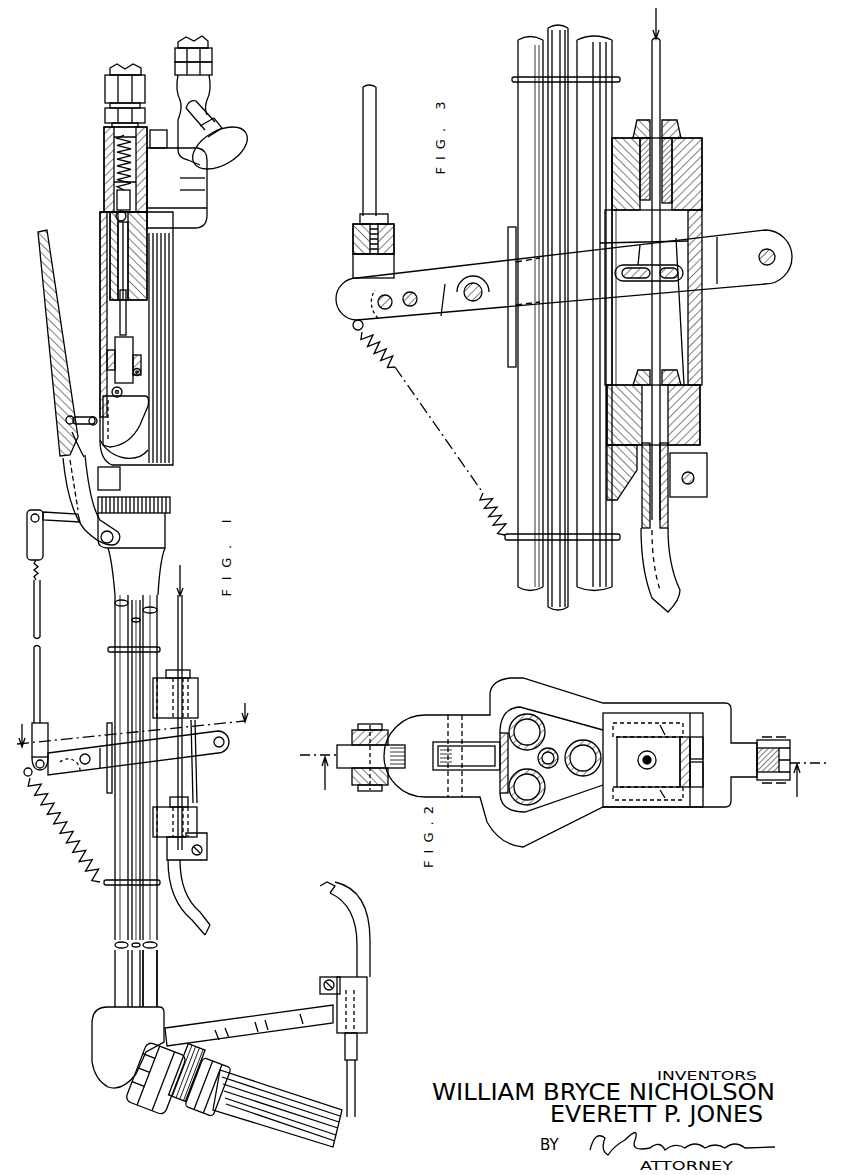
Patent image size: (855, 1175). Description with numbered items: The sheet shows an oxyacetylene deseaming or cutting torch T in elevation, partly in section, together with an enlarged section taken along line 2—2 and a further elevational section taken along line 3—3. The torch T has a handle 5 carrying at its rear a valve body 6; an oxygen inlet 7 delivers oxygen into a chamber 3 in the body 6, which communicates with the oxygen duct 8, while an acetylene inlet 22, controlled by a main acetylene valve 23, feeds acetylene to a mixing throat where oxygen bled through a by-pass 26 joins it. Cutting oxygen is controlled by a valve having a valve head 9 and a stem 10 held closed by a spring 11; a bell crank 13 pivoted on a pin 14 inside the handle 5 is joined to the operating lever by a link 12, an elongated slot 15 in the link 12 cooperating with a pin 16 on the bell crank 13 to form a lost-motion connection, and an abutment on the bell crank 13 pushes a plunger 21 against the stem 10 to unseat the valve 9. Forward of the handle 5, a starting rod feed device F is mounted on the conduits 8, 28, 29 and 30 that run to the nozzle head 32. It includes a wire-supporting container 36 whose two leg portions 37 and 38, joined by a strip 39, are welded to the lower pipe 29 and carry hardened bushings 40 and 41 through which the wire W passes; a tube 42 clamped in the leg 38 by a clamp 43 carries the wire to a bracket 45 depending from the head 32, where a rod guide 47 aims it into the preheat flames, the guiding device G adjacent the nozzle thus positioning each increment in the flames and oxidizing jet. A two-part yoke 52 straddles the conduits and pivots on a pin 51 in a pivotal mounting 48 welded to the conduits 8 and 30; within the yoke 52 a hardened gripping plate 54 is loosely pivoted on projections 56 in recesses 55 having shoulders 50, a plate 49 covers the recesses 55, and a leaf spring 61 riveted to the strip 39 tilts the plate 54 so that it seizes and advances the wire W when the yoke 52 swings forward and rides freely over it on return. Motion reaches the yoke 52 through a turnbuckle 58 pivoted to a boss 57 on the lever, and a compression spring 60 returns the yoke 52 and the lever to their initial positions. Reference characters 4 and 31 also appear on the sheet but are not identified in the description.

In FIG. 1, the section line 2— 2 is at (127, 718).
In FIG. 1, the chamber 3 is at (150, 240).
In FIG. 2, the chamber 3 is at (565, 785).
In FIG. 1, the lever 4 is at (50, 330).
In FIG. 1, the handle 5 is at (120, 344).
In FIG. 1, the valve body 6 is at (110, 190).
In FIG. 1, the oxygen inlet 7 is at (112, 70).
In FIG. 1, the oxygen duct 8 is at (118, 592).
In FIG. 3, the oxygen duct 8 is at (520, 126).
In FIG. 2, the oxygen duct 8 is at (525, 807).
In FIG. 1, the valve head 9 is at (116, 212).
In FIG. 1, the valve stem 10 is at (118, 322).
In FIG. 1, the spring 11 is at (115, 168).
In FIG. 1, the link 12 is at (70, 416).
In FIG. 1, the valve-operating bell crank 13 is at (106, 405).
In FIG. 1, the pin 14 is at (112, 388).
In FIG. 1, the elongated slot 15 is at (80, 440).
In FIG. 1, the pin 16 is at (93, 417).
In FIG. 1, the plunger 21 is at (130, 366).
In FIG. 1, the acetylene inlet 22 is at (210, 46).
In FIG. 1, the main acetylene valve 23 is at (235, 128).
In FIG. 1, the by-pass 26 is at (146, 173).
In FIG. 3, the conduit 28 is at (550, 32).
In FIG. 2, the conduit 28 is at (552, 748).
In FIG. 1, the lower pipe 29 is at (158, 925).
In FIG. 3, the lower pipe 29 is at (586, 40).
In FIG. 2, the lower pipe 29 is at (586, 740).
In FIG. 2, the conduit 30 is at (520, 714).
In FIG. 1, the nozzle coupling nuts 31 is at (214, 1100).
In FIG. 1, the nozzle head 32 is at (95, 1022).
In FIG. 1, the wire-supporting and guiding device 36 is at (205, 665).
In FIG. 3, the wire-supporting and guiding device 36 is at (718, 201).
In FIG. 1, the leg portion 37 is at (200, 700).
In FIG. 3, the leg portion 37 is at (702, 160).
In FIG. 1, the leg portion 38 is at (200, 832).
In FIG. 3, the leg portion 38 is at (700, 412).
In FIG. 2, the leg portion 38 is at (606, 810).
In FIG. 1, the strip 39 is at (208, 802).
In FIG. 3, the strip 39 is at (702, 318).
In FIG. 2, the strip 39 is at (692, 725).
In FIG. 1, the hardened steel bushing 40 is at (172, 670).
In FIG. 3, the hardened steel bushing 40 is at (638, 120).
In FIG. 1, the hardened steel bushing 41 is at (170, 800).
In FIG. 3, the hardened steel bushing 41 is at (636, 378).
In FIG. 1, the metallic conduit 42 is at (200, 918).
In FIG. 3, the metallic conduit 42 is at (642, 552).
In FIG. 1, the clamp 43 is at (208, 851).
In FIG. 3, the clamp 43 is at (696, 498).
In FIG. 2, the clamp 43 is at (731, 782).
In FIG. 1, the bracket 45 is at (281, 1012).
In FIG. 1, the rod guide 47 is at (358, 1040).
In FIG. 1, the pivotal mounting 48 is at (108, 777).
In FIG. 3, the pivotal mounting 48 is at (505, 330).
In FIG. 2, the pivotal mounting 48 is at (475, 755).
In FIG. 3, the plate 49 is at (621, 243).
In FIG. 2, the plate 49 is at (700, 722).
In FIG. 3, the shoulders 50 is at (644, 293).
In FIG. 1, the pin 51 is at (82, 754).
In FIG. 3, the pin 51 is at (468, 288).
In FIG. 2, the pin 51 is at (455, 714).
In FIG. 1, the yoke 52 is at (82, 771).
In FIG. 3, the yoke 52 is at (428, 280).
In FIG. 2, the yoke 52 is at (420, 716).
In FIG. 3, the gripping plate 54 is at (627, 290).
In FIG. 2, the gripping plate 54 is at (630, 740).
In FIG. 3, the recesses 55 is at (640, 246).
In FIG. 2, the recesses 55 is at (663, 725).
In FIG. 2, the pins 56 is at (620, 800).
In FIG. 1, the boss 57 is at (46, 510).
In FIG. 1, the adjustable turnbuckle 58 is at (42, 670).
In FIG. 3, the adjustable turnbuckle 58 is at (364, 112).
In FIG. 2, the adjustable turnbuckle 58 is at (371, 757).
In FIG. 1, the compression spring 60 is at (78, 856).
In FIG. 3, the compression spring 60 is at (475, 512).
In FIG. 1, the leaf spring 61 is at (200, 769).
In FIG. 3, the leaf spring 61 is at (679, 296).
In FIG. 2, the leaf spring 61 is at (684, 790).
In FIG. 1, the starting rod feed device F is at (82, 737).
In FIG. 3, the starting rod feed device F is at (497, 255).
In FIG. 2, the starting rod feed device F is at (492, 835).
In FIG. 1, the guiding device G is at (314, 996).
In FIG. 1, the oxyacetylene torch T is at (180, 394).
In FIG. 1, the metal wire W is at (186, 605).
In FIG. 3, the metal wire W is at (650, 72).
In FIG. 2, the metal wire W is at (647, 750).